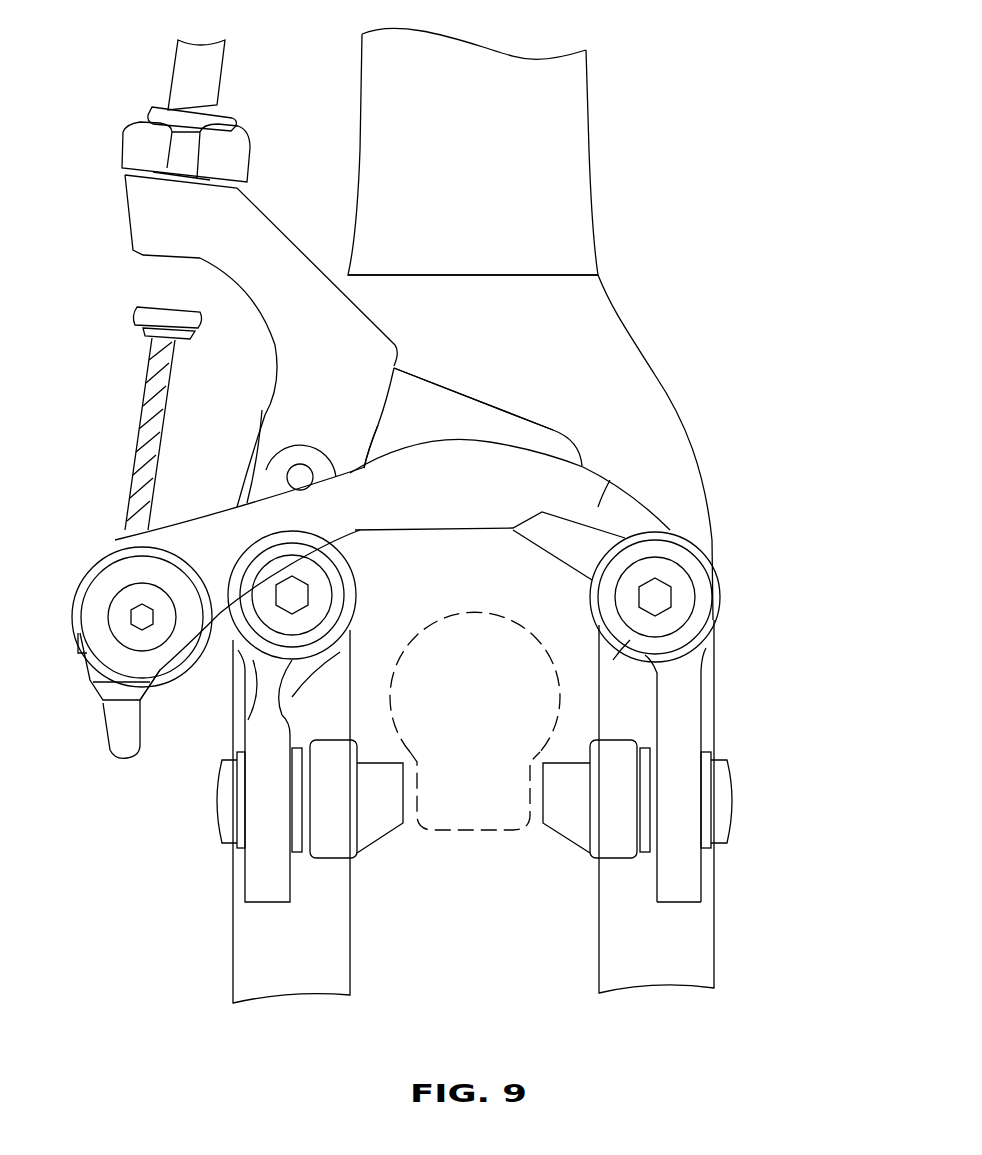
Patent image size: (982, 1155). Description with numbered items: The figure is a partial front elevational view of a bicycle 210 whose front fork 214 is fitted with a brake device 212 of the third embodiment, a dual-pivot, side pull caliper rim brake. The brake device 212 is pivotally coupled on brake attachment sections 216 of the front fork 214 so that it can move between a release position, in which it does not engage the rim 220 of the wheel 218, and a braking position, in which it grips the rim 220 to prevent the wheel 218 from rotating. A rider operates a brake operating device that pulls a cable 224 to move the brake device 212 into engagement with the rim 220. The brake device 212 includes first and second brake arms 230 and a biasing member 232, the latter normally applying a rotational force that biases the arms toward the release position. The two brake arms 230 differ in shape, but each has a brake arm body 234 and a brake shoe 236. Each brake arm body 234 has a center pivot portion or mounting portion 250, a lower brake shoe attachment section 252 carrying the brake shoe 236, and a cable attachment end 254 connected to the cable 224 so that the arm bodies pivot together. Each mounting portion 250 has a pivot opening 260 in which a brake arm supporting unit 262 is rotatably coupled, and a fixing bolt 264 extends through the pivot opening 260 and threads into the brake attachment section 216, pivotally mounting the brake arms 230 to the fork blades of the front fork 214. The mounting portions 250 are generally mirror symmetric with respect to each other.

The bicycle 210 is at (684, 149).
The brake device 212 is at (475, 372).
The front fork 214 is at (712, 354).
The brake attachment sections 216 is at (354, 537).
The wheel 218 is at (493, 610).
The rim 220 is at (476, 836).
The cable 224 is at (200, 78).
The first and second brake arms 230 is at (342, 345).
The biasing member 232 is at (515, 398).
The brake arm body 234 is at (340, 408).
The brake shoe 236 is at (378, 810).
The mounting portions 250 is at (322, 657).
The lower brake shoe attachment section 252 is at (262, 890).
The cable attachment end 254 is at (240, 232).
The pivot opening 260 is at (240, 612).
The brake arm supporting units 262 is at (367, 649).
The fixing bolts 264 is at (318, 590).